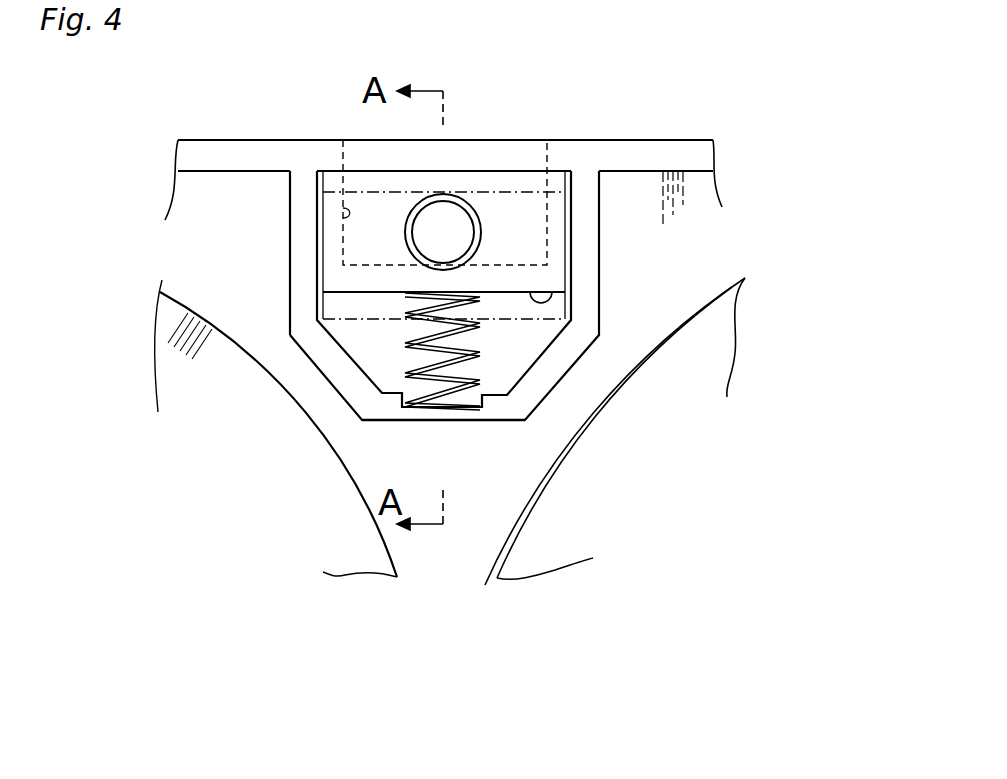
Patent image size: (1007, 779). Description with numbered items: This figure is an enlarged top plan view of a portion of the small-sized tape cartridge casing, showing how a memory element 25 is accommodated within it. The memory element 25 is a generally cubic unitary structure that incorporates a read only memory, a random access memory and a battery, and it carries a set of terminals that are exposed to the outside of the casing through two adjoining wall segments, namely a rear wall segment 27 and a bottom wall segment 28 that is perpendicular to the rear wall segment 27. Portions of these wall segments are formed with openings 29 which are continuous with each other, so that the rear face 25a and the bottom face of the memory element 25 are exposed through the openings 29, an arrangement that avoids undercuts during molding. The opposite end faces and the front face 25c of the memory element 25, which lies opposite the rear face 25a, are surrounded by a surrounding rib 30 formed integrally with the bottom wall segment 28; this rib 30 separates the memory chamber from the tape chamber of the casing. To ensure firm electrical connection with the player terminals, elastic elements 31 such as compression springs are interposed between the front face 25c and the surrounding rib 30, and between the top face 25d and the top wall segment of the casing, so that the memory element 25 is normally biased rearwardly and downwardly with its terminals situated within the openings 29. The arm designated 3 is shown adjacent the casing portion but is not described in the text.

The arm 3 is at (177, 295).
The memory element 25 is at (525, 167).
The rear face 25a is at (363, 168).
The front face 25c is at (553, 298).
The top face 25d is at (528, 238).
The rear wall segment 27 is at (200, 140).
The bottom wall segment 28 is at (253, 198).
The openings 29 is at (343, 215).
The surrounding rib 30 is at (507, 423).
The elastic elements 31 is at (462, 193).